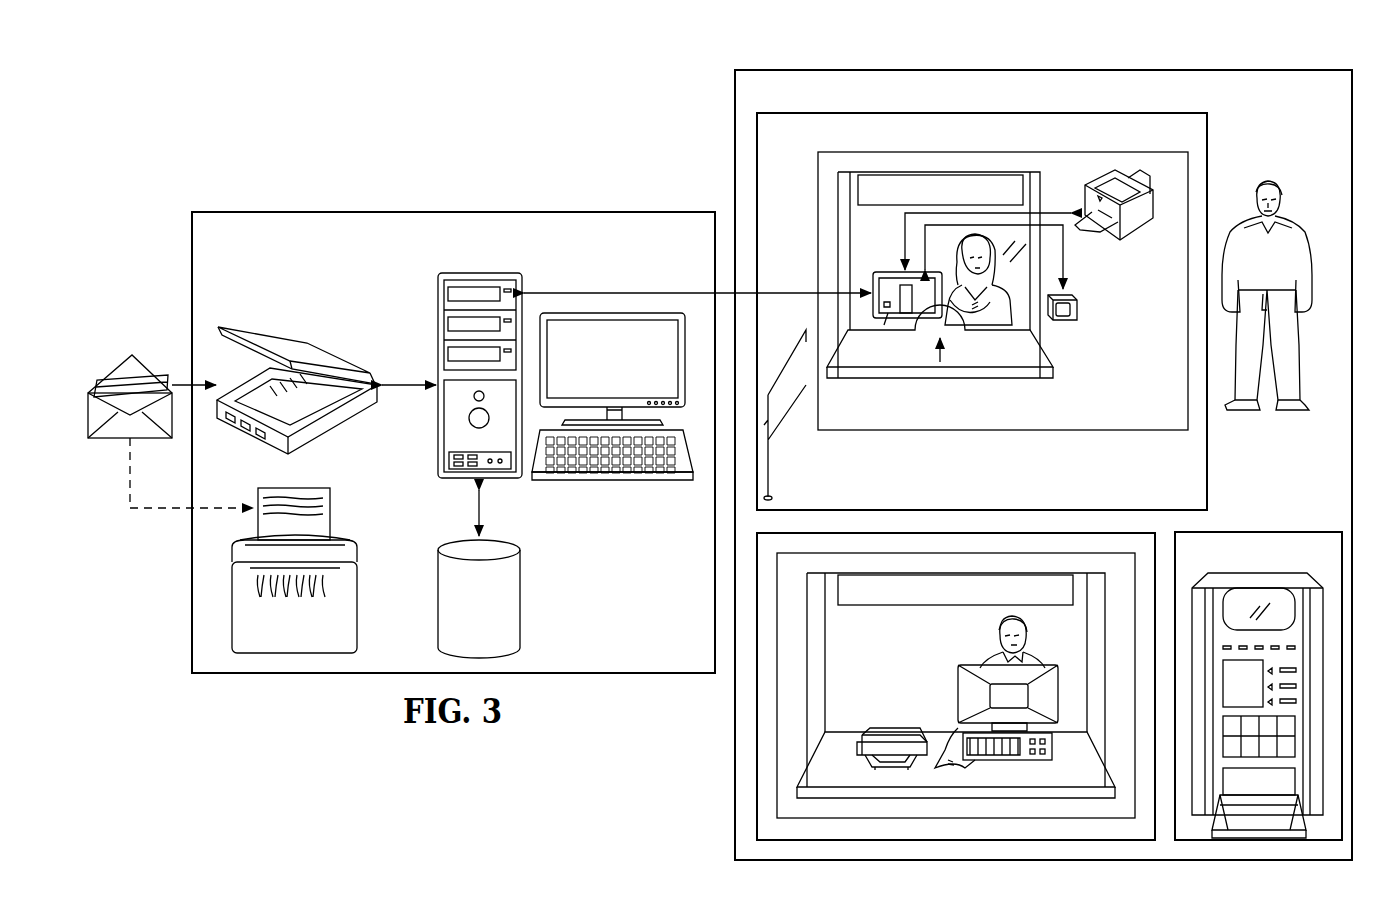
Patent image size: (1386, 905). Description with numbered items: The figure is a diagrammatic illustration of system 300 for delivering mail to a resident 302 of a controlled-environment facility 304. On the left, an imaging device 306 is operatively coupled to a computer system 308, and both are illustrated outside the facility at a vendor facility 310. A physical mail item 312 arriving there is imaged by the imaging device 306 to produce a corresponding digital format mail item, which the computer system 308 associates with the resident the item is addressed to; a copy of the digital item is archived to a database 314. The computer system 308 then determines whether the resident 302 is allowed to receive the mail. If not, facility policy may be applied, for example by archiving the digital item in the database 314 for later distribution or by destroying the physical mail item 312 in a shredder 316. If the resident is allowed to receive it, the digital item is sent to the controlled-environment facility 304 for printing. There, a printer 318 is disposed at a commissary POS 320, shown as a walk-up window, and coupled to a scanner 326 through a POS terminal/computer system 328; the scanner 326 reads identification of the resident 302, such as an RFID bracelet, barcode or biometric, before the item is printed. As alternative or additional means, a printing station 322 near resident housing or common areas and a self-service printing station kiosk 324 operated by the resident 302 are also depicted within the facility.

The system 300 is at (158, 210).
The resident 302 is at (1290, 222).
The controlled-environment facility 304 is at (1212, 66).
The imaging device 306 is at (265, 334).
The computer system 308 is at (436, 321).
The vendor facility 310 is at (303, 209).
The physical mail item 312 is at (97, 378).
The database 314 is at (502, 615).
The shredder 316 is at (357, 600).
The printer 318 is at (1132, 245).
The commissary POS 320 is at (1212, 141).
The printing station 322 is at (898, 679).
The self-service printing station kiosk 324 is at (1293, 529).
The scanner 326 is at (1078, 305).
The POS terminal/computer system 328 is at (884, 270).